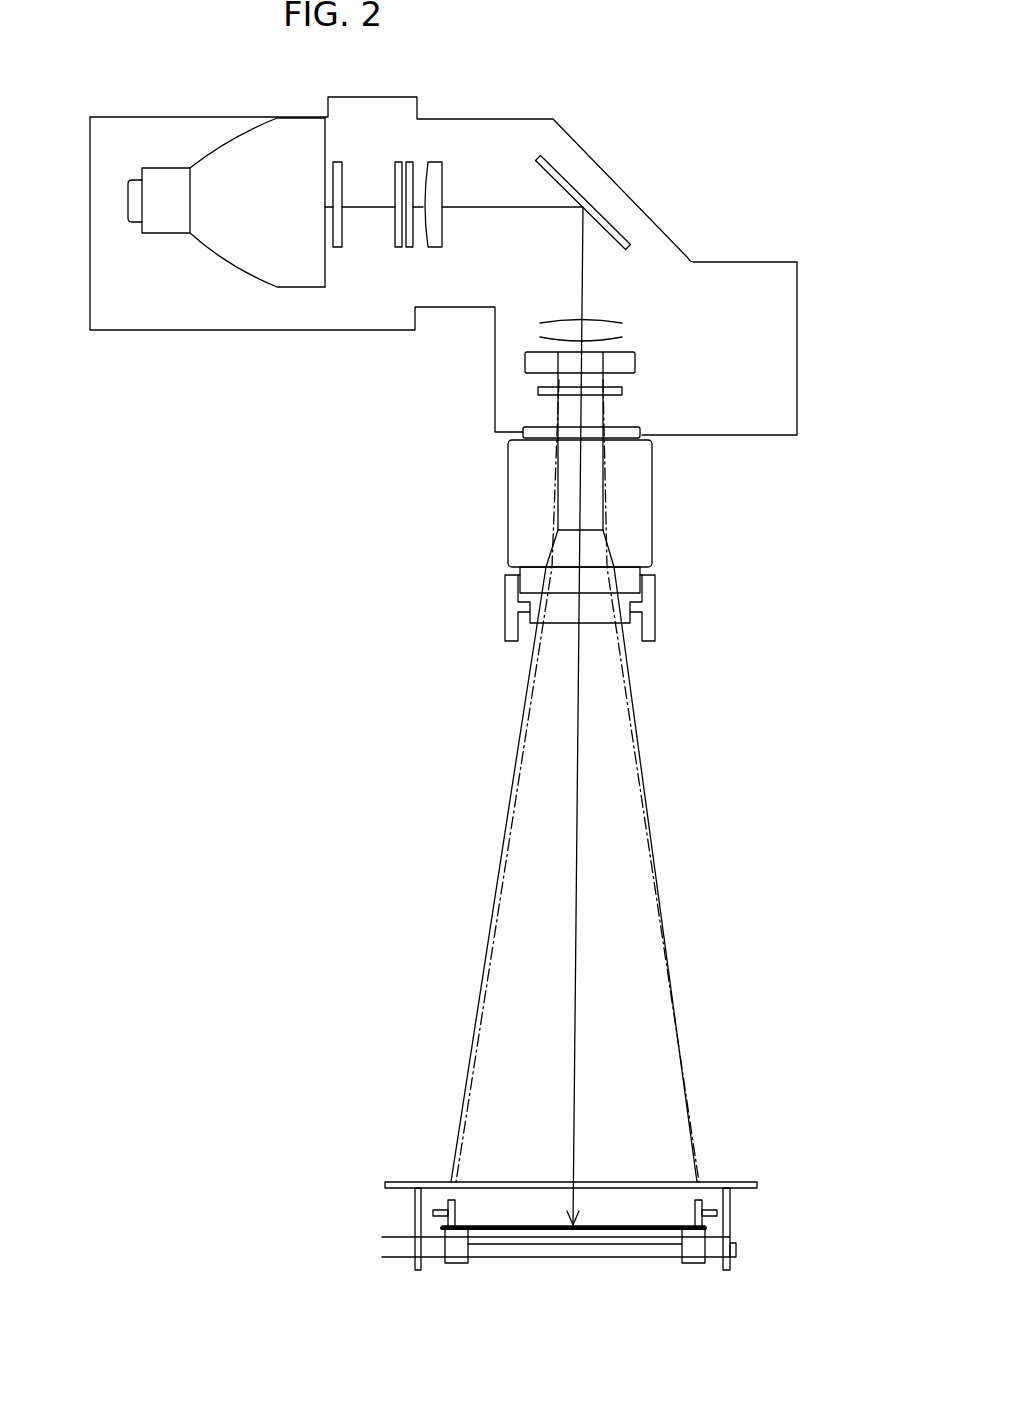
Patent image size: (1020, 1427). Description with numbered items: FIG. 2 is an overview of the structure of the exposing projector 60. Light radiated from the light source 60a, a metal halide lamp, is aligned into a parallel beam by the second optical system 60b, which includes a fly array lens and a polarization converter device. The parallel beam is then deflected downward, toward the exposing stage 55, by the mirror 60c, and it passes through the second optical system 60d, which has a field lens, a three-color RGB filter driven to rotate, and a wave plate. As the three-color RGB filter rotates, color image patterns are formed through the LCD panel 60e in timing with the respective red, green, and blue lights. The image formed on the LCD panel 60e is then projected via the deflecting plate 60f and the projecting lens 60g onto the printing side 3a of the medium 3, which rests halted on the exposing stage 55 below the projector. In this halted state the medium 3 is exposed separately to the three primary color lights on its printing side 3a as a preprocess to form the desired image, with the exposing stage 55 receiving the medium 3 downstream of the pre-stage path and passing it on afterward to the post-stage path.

The exposing projector 60 is at (638, 182).
The light source 60a is at (216, 148).
The second optical system 60b is at (437, 146).
The mirror 60c is at (622, 236).
The second optical system 60d is at (607, 320).
The LCD panel 60e is at (525, 360).
The deflecting plate 60f is at (623, 391).
The projecting lens 60g is at (632, 553).
The medium 3 is at (622, 1226).
The printing side 3a is at (527, 1218).
The exposing stage 55 is at (562, 1264).